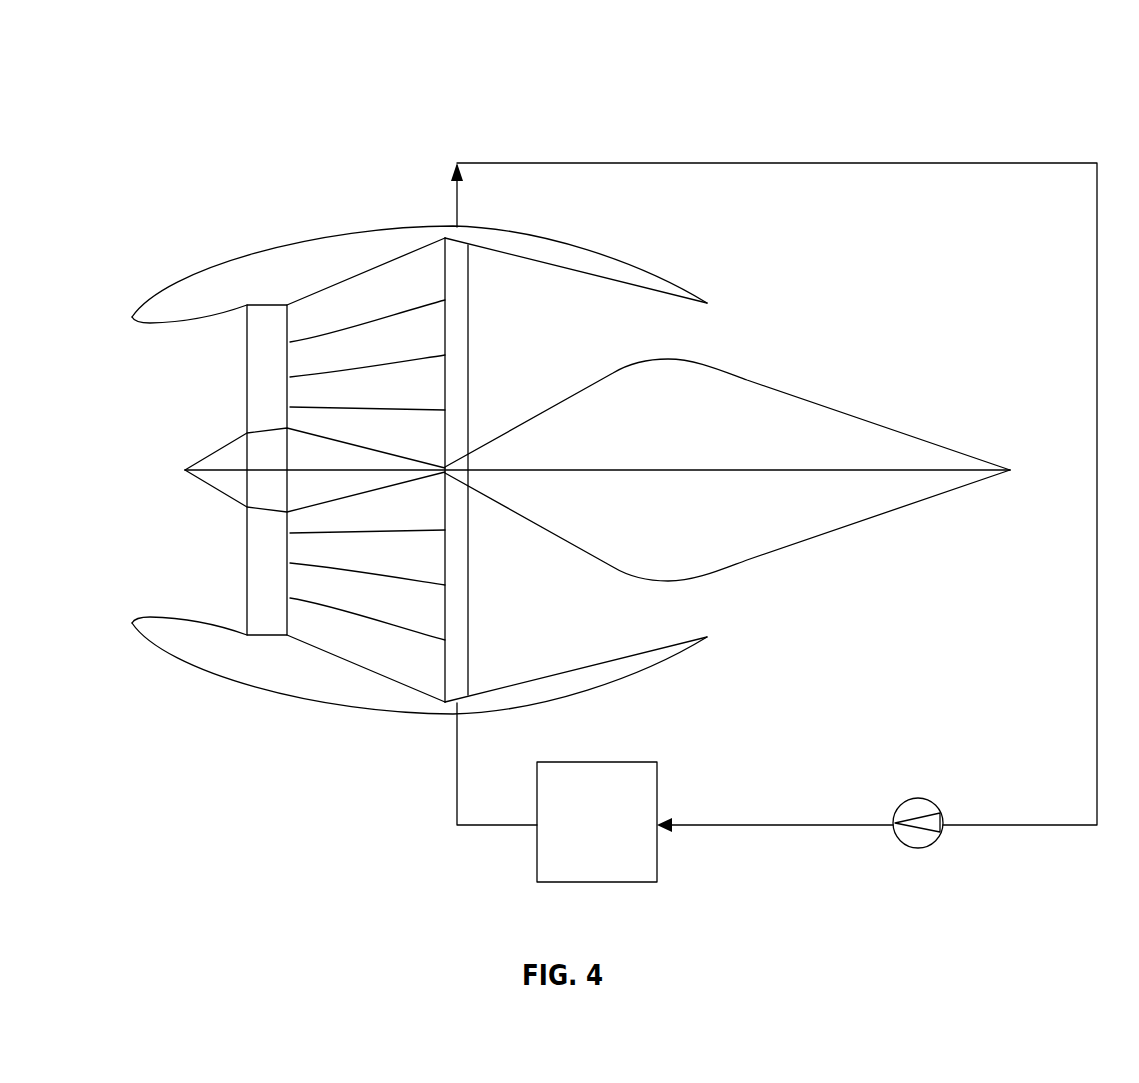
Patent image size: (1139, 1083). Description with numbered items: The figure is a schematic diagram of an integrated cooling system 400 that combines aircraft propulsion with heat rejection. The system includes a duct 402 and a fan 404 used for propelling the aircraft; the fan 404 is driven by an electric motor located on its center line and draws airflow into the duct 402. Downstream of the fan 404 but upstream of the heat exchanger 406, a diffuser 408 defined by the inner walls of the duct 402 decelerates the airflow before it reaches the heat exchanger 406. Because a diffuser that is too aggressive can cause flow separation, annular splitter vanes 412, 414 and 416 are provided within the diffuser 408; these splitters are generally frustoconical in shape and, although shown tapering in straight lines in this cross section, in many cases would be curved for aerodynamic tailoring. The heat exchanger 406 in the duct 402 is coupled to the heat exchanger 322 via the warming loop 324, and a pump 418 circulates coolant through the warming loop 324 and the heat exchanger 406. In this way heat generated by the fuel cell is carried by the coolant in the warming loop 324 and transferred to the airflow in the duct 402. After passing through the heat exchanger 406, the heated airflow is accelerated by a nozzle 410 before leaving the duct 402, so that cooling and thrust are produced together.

The integrated cooling system 400 is at (1024, 135).
The duct 402 is at (267, 240).
The fan 404 is at (245, 322).
The heat exchanger 406 is at (473, 260).
The diffuser 408 is at (368, 268).
The nozzle 410 is at (620, 377).
The annular splitter vane 412 is at (427, 303).
The annular splitter vane 414 is at (432, 357).
The annular splitter vane 416 is at (305, 405).
The pump 418 is at (935, 802).
The warming loop 324 is at (1097, 295).
The heat exchanger 322 is at (580, 868).